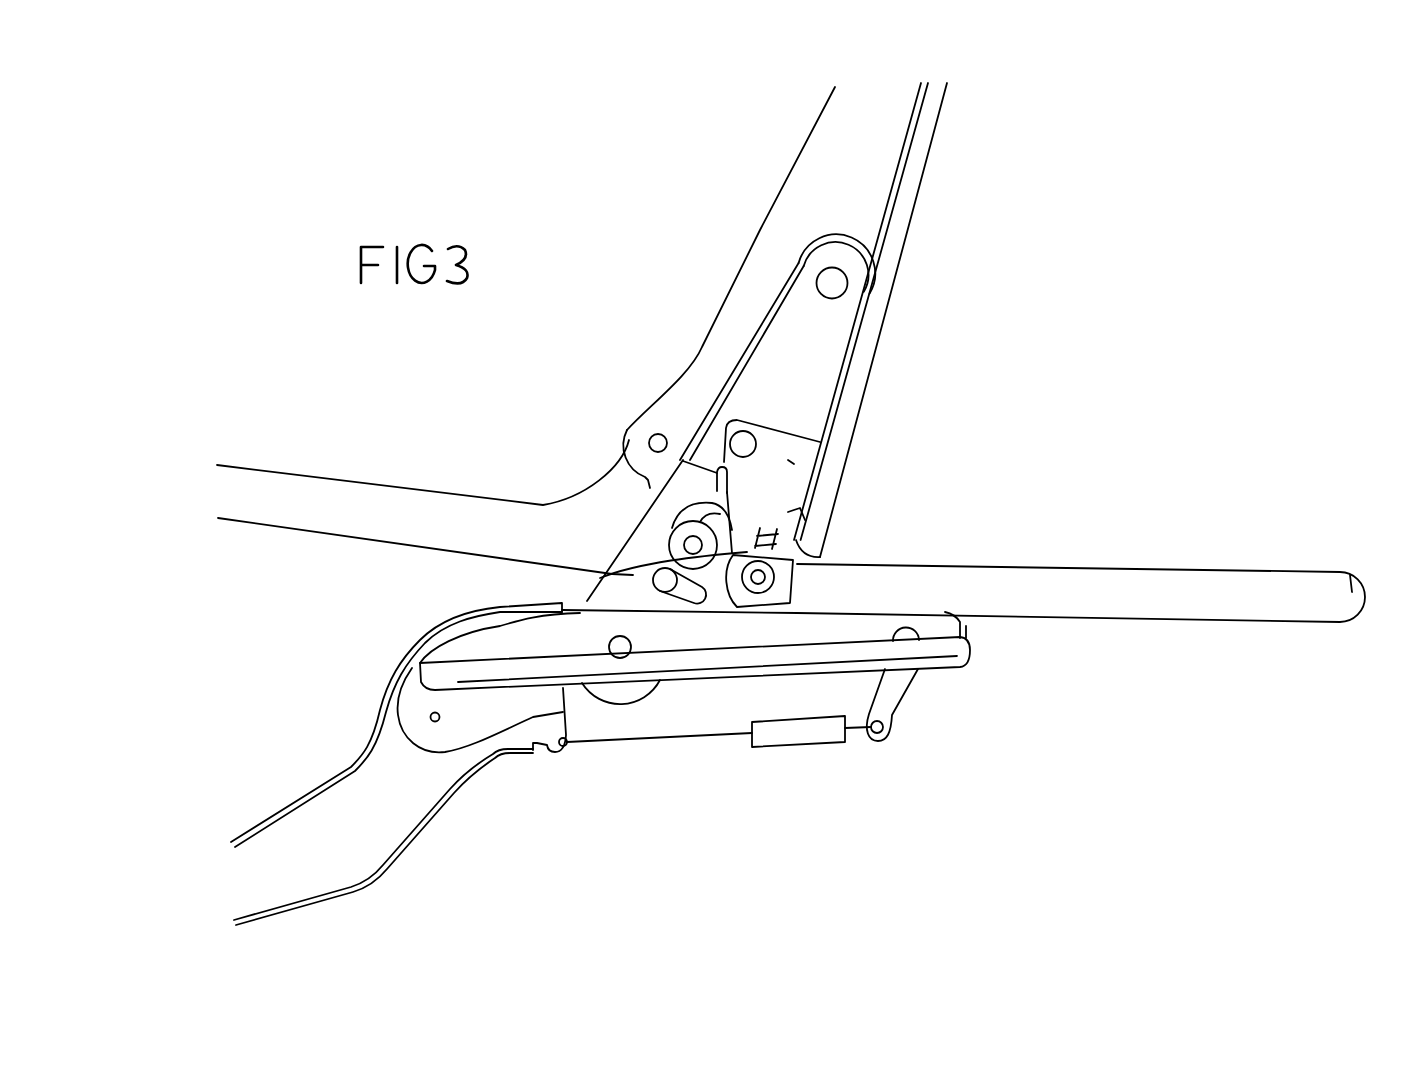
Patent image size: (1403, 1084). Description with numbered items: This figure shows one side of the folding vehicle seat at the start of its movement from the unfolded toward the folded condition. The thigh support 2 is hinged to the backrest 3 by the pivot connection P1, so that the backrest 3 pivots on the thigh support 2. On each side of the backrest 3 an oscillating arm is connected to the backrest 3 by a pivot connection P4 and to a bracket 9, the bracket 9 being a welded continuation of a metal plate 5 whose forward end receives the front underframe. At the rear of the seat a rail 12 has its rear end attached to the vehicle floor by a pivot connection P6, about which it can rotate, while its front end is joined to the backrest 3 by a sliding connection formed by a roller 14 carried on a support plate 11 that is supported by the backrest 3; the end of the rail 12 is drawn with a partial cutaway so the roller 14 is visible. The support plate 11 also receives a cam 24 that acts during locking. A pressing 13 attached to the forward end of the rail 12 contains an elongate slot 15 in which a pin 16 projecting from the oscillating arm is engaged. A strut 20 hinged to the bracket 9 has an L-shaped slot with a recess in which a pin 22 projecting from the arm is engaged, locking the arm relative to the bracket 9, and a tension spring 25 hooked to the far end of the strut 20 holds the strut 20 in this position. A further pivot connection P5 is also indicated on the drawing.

The thigh support 2 is at (338, 492).
The backrest 3 is at (748, 262).
The metal plate 5 is at (430, 800).
The bracket 9 is at (957, 651).
The support plate 11 is at (790, 487).
The rail 12 is at (1093, 570).
The pressing 13 is at (726, 595).
The roller 14 is at (760, 578).
The elongate slot 15 is at (698, 598).
The pin 16 is at (662, 581).
The strut 20 is at (683, 515).
The pin 22 is at (680, 538).
The cam 24 is at (716, 481).
The tension spring 25 is at (822, 733).
The pivot connection P1 is at (655, 440).
The pivot connection P4 is at (836, 283).
The pivot point P5 is at (619, 648).
The pivot connection P6 is at (1350, 575).